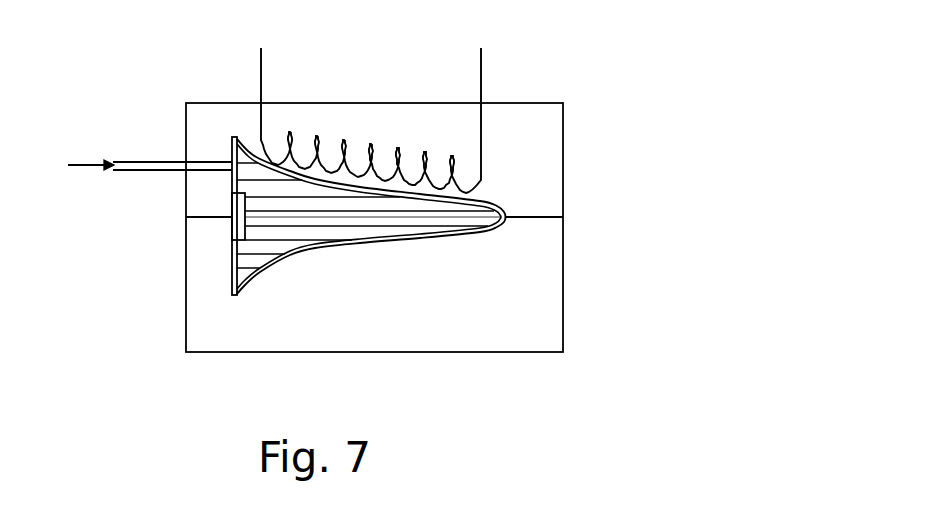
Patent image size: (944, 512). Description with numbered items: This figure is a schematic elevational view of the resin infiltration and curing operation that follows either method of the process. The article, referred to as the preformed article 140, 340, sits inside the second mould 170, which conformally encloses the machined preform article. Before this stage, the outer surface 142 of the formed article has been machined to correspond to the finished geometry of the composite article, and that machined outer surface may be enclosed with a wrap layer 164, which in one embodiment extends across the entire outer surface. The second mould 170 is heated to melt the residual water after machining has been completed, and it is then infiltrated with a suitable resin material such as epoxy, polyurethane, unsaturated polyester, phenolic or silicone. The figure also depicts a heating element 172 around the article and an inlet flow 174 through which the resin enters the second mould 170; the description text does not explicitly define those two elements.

The horn / ultrasonic atomizer 140 is at (363, 272).
The preformed article 340 is at (363, 272).
The outer surface 142 is at (360, 240).
The wrap layer 164 is at (420, 242).
The second mould 170 is at (563, 155).
The heating coil 172 is at (367, 147).
The inlet flow 174 is at (88, 168).